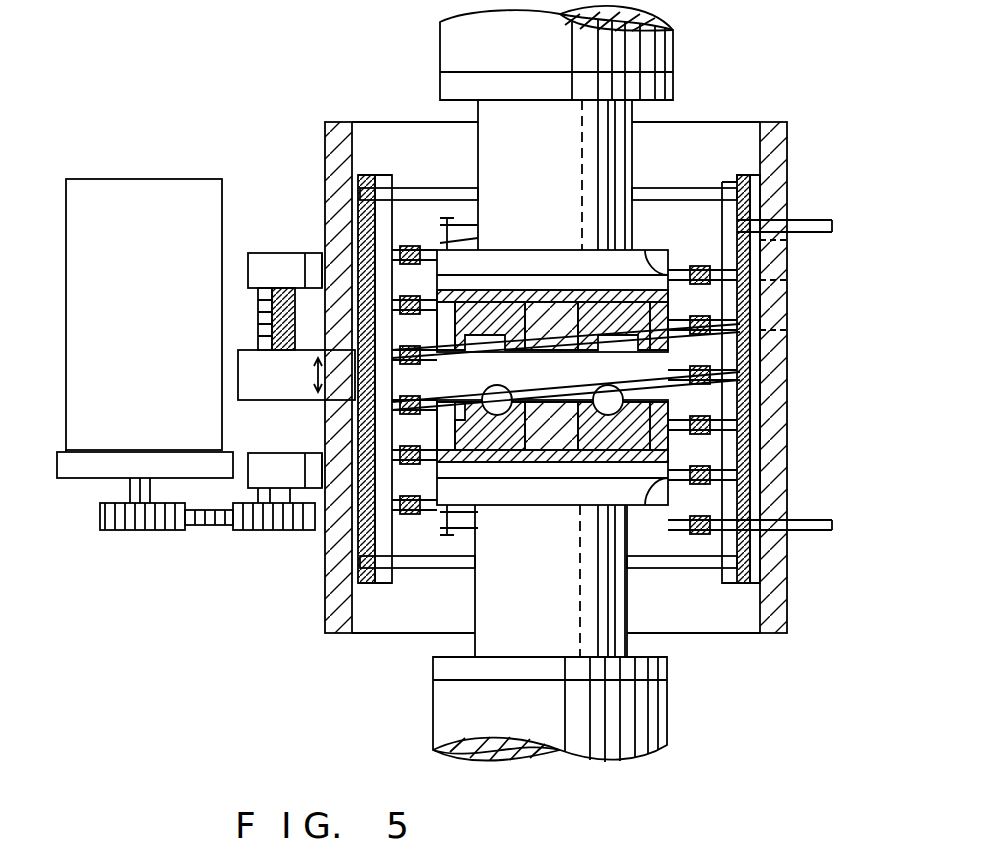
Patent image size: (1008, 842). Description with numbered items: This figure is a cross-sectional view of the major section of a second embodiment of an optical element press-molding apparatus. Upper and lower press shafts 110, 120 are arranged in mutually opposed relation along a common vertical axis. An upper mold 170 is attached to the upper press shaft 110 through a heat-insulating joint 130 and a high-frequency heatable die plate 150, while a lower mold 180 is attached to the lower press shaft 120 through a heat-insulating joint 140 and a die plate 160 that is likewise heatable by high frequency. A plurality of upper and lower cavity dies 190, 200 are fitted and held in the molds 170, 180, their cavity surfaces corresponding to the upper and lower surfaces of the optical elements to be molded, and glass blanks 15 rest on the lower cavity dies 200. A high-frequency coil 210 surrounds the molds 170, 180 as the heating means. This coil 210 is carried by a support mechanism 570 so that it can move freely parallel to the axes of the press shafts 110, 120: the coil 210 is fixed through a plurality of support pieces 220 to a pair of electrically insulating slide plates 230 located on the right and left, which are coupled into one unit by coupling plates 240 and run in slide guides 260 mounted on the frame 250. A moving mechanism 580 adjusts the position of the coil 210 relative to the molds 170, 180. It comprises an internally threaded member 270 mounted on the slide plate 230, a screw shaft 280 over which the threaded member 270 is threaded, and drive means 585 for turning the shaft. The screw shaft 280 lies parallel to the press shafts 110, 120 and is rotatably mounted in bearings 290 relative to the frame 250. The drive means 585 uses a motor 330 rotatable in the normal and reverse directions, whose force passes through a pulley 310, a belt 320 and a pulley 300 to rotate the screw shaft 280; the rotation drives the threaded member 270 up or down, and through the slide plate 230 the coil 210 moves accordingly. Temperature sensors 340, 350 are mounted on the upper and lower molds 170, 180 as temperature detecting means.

The glass blank 15 is at (595, 380).
The upper press shaft 110 is at (673, 62).
The lower press shaft 120 is at (667, 722).
The heat-insulating joint 130 is at (632, 122).
The heat-insulating joint 140 is at (627, 598).
The high-frequency heatable die plate 150 is at (640, 270).
The die plate 160 is at (652, 505).
The upper mold 170 is at (700, 290).
The lower mold 180 is at (700, 455).
The upper cavity die 190 is at (700, 378).
The lower cavity die 200 is at (690, 408).
The high-frequency coil 210 is at (700, 345).
The support piece 220 is at (700, 322).
The slide plate 230 is at (330, 215).
The coupling plate 240 is at (440, 188).
The frame 250 is at (787, 160).
The slide guide 260 is at (372, 175).
The internally threaded member 270 is at (245, 350).
The screw shaft 280 is at (258, 305).
The bearing 290 is at (275, 253).
The pulley 300 is at (275, 532).
The pulley 310 is at (145, 532).
The belt 320 is at (212, 527).
The motor 330 is at (152, 179).
The temperature sensor 340 is at (478, 228).
The temperature sensor 350 is at (478, 530).
The support mechanism 570 is at (760, 492).
The moving mechanism 580 is at (98, 440).
The drive means 585 is at (66, 390).